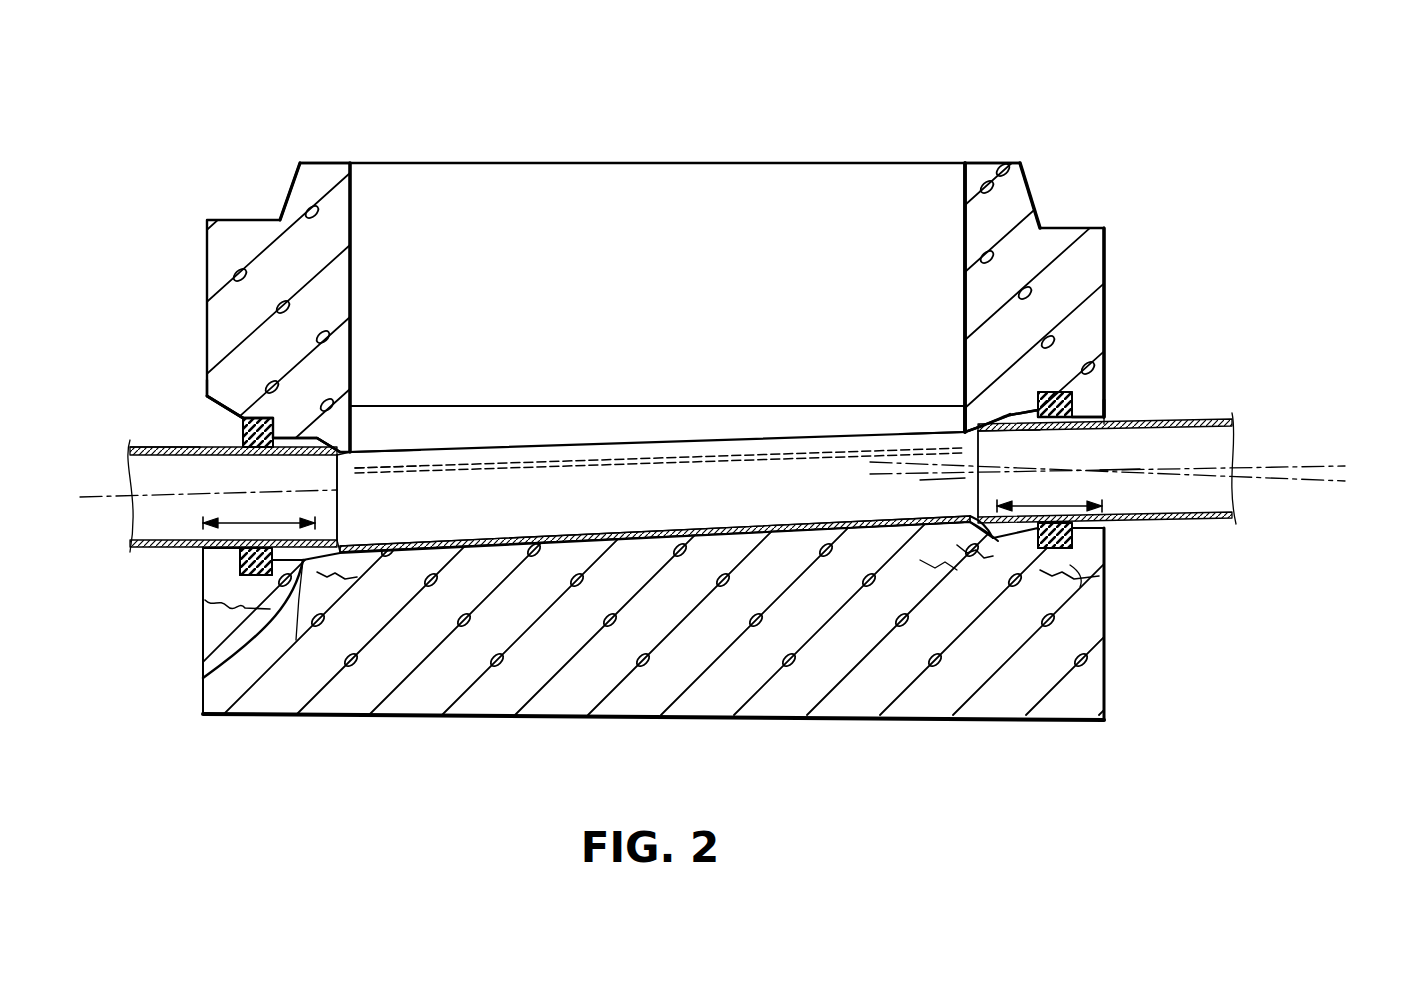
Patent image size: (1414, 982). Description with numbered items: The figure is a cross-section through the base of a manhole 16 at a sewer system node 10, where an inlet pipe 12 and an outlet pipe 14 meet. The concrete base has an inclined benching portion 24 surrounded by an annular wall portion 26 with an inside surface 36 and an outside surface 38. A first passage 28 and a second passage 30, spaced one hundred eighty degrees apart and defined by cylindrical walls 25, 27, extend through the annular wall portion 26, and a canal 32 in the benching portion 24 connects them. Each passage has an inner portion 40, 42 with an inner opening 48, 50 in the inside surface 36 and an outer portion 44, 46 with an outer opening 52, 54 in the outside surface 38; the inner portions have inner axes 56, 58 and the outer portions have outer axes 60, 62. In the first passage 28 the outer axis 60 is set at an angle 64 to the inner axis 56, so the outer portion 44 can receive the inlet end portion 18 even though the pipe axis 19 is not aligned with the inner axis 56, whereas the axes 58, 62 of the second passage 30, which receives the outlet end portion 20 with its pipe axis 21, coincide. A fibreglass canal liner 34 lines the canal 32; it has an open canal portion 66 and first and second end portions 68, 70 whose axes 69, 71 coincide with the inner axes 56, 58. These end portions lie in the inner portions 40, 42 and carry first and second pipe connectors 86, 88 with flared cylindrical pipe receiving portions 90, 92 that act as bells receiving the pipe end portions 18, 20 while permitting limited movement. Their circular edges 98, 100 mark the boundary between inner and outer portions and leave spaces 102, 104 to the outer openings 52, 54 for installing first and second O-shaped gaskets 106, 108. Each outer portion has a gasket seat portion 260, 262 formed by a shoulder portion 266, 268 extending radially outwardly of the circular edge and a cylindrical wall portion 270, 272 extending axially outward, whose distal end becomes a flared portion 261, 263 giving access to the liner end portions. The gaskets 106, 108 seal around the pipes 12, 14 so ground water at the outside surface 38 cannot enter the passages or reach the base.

The sewer system node 10 is at (610, 128).
The inlet pipe 12 is at (1215, 520).
The outlet pipe 14 is at (130, 548).
The manhole 16 is at (775, 152).
The inlet end portion 18 is at (1026, 522).
The pipe axis 19 is at (1316, 467).
The outlet end portion 20 is at (205, 678).
The pipe axis 21 is at (146, 446).
The inclined benching portion 24 is at (545, 405).
The cylindrical wall 25 is at (1020, 432).
The annular wall portion 26 is at (320, 165).
The cylindrical wall 27 is at (305, 448).
The first passage 28 is at (1114, 407).
The second passage 30 is at (218, 418).
The canal 32 is at (667, 540).
The canal liner 34 is at (510, 548).
The inside surface 36 is at (965, 210).
The outside surface 38 is at (1106, 250).
The inner portion 40 is at (935, 594).
The inner portion 42 is at (300, 612).
The outer portion 44 is at (1080, 582).
The outer portion 46 is at (233, 607).
The inner opening 48 is at (930, 423).
The inner opening 50 is at (349, 447).
The outer opening 52 is at (1099, 393).
The outer opening 54 is at (208, 556).
The inner axis 56 is at (922, 480).
The inner axis 58 is at (340, 512).
The outer axis 60 is at (1132, 467).
The outer axis 62 is at (272, 496).
The angle 64 is at (1345, 466).
The open canal portion 66 is at (605, 446).
The first end portion 68 is at (922, 434).
The axis 69 is at (905, 462).
The second end portion 70 is at (396, 448).
The axis 71 is at (355, 490).
The first pipe connector 86 is at (980, 412).
The second pipe connector 88 is at (322, 428).
The flared cylindrical pipe receiving portion 90 is at (998, 400).
The flared cylindrical pipe receiving portion 92 is at (316, 414).
The circular edge 98 is at (993, 538).
The circular edge 100 is at (333, 551).
The space 102 is at (1062, 500).
The space 104 is at (150, 507).
The first O-shaped gasket 106 is at (1074, 532).
The second O-shaped gasket 108 is at (240, 574).
The gasket seat portion 260 is at (1073, 392).
The flared portion 261 is at (1092, 552).
The gasket seat portion 262 is at (268, 414).
The flared portion 263 is at (212, 398).
The shoulder portion 266 is at (1037, 392).
The shoulder portion 268 is at (293, 432).
The cylindrical wall portion 270 is at (1080, 402).
The cylindrical wall portion 272 is at (248, 410).